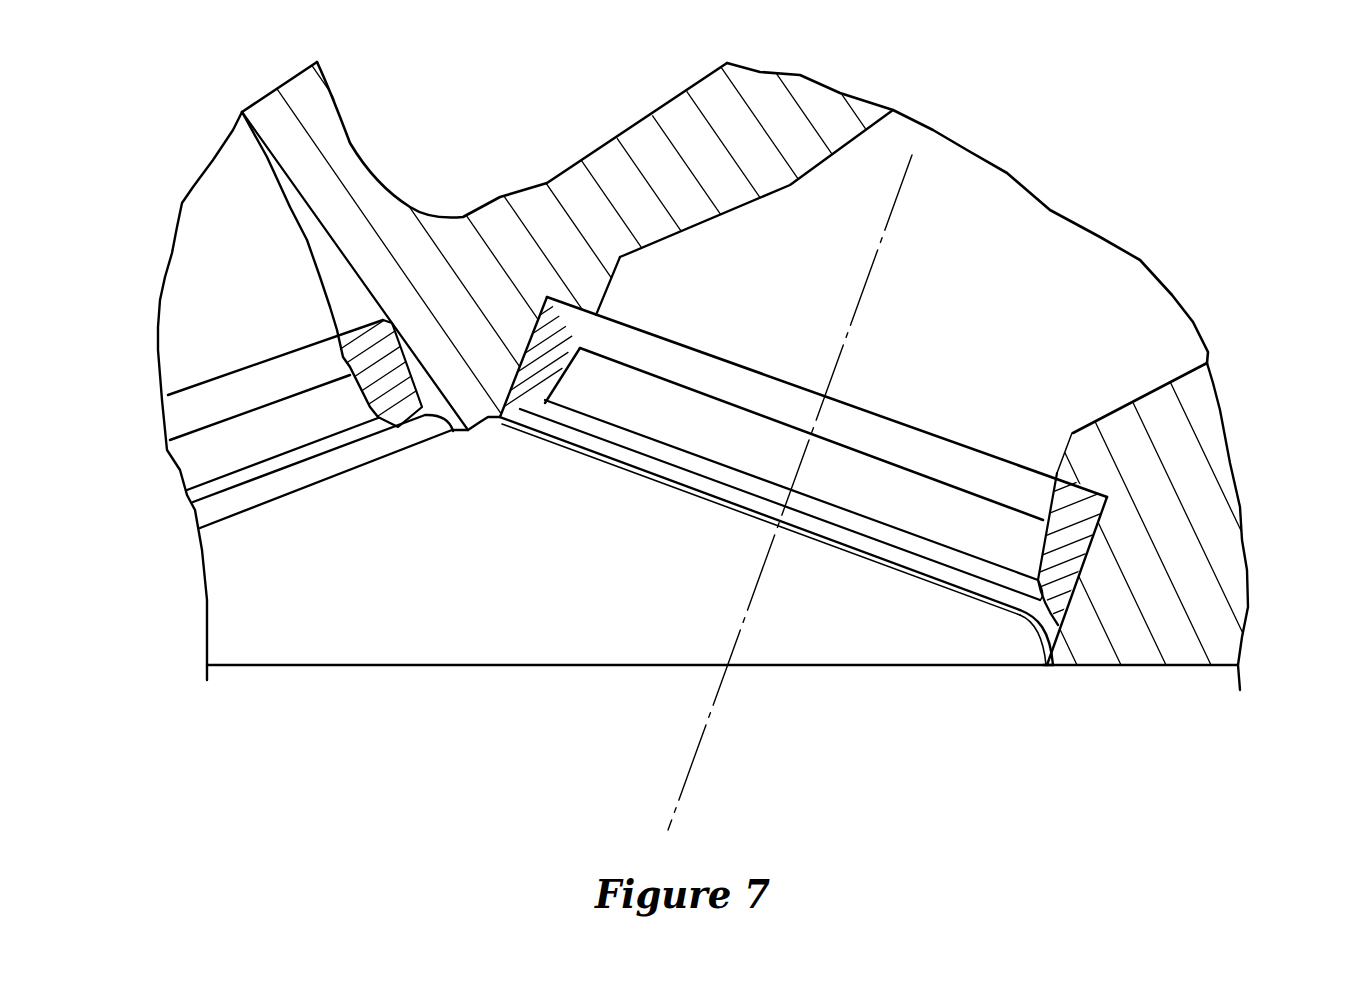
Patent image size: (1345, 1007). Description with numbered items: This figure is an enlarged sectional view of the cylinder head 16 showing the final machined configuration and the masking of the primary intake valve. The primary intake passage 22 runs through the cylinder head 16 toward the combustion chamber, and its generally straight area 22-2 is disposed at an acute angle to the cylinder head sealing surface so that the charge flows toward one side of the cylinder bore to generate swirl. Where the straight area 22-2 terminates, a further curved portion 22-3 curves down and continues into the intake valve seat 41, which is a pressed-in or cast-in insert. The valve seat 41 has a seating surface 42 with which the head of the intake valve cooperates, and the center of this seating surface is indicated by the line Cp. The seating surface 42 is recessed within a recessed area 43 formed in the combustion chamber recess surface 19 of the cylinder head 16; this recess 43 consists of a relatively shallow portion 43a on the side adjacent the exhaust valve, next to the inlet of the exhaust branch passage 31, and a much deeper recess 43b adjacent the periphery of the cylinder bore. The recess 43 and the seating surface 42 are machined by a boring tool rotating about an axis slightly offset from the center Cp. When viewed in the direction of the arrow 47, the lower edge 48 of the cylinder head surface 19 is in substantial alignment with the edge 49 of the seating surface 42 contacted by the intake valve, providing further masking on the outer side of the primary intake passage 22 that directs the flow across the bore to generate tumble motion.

The branch passage 31 is at (190, 257).
The generally straight area 22-2 is at (797, 183).
The primary intake passage 22 is at (1017, 240).
The curved portion 22-3 is at (610, 297).
The cylinder head 16 is at (1200, 434).
The seating surface 42 is at (1038, 585).
The intake valve seat 41 is at (1082, 525).
The shallow portion 43a is at (483, 443).
The recessed area 43 is at (688, 500).
The edge of the seating surface 49 is at (1023, 613).
The deeper recess 43b is at (1043, 647).
The lower edge of the cylinder head surface 48 is at (1045, 663).
The arrow 47 is at (1050, 762).
The combustion chamber recess surface 19 is at (310, 650).
The center of the seating surface Cp is at (710, 718).